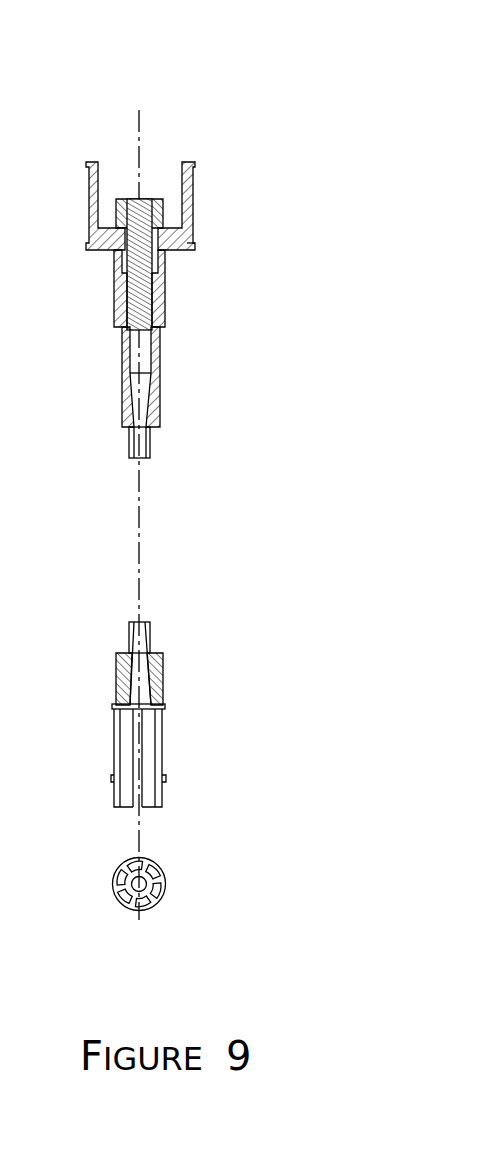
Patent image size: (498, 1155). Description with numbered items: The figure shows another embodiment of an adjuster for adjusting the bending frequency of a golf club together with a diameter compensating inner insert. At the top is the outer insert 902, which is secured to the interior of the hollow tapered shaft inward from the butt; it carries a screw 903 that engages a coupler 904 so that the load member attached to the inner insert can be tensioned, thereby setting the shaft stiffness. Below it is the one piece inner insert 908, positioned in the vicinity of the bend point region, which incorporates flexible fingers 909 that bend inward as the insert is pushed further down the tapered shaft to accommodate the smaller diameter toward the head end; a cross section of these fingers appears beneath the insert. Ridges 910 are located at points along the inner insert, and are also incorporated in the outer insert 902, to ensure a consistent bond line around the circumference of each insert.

The outer insert 902 is at (225, 194).
The screw 903 is at (224, 219).
The coupler 904 is at (233, 372).
The one piece inner insert 908 is at (228, 547).
The flexible fingers 909 is at (211, 807).
The ridges 910 is at (229, 482).